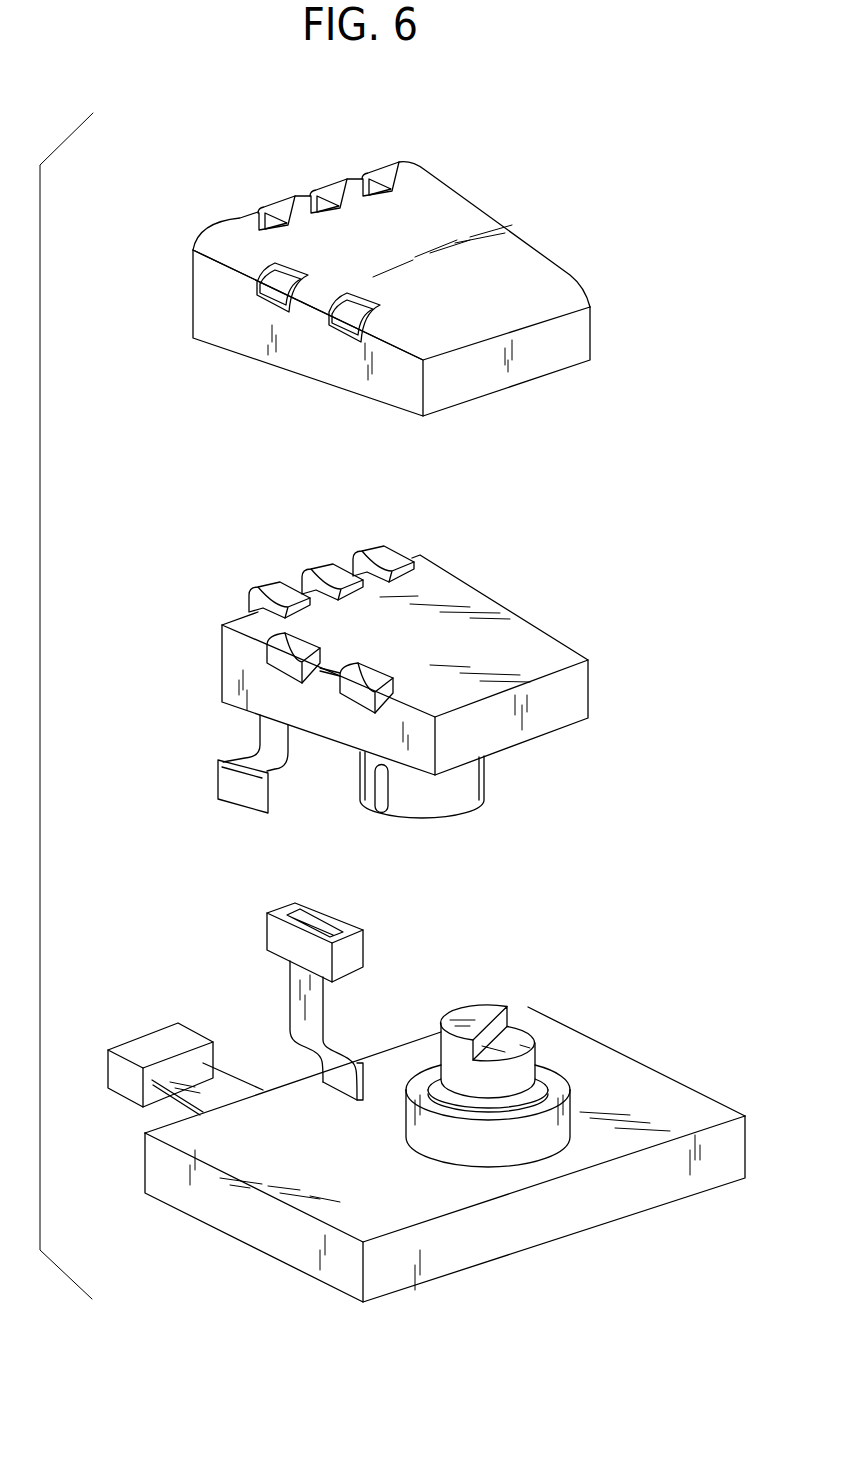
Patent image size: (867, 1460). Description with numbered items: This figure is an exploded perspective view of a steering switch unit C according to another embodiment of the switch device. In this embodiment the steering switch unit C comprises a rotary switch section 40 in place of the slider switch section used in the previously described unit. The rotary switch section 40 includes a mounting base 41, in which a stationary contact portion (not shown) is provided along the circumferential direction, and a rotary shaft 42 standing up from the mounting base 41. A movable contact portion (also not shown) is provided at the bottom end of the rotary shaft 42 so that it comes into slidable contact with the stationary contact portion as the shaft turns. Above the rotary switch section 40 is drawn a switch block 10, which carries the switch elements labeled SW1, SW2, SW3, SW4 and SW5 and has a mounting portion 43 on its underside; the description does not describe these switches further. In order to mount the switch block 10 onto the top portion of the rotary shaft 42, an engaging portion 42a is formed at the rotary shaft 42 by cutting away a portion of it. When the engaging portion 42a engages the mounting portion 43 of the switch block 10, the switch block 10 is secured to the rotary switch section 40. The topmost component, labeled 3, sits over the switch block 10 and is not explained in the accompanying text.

The steering switch unit C is at (492, 162).
The cover 3 is at (533, 262).
The switch block 10 is at (507, 633).
The switch SW1 is at (273, 587).
The switch SW2 is at (327, 570).
The switch SW3 is at (380, 558).
The switch SW4 is at (287, 660).
The switch SW5 is at (367, 680).
The mounting portion 43 is at (483, 787).
The rotary switch section 40 is at (620, 1043).
The mounting base 41 is at (652, 1092).
The rotary shaft 42 is at (470, 1020).
The engaging portion 42a is at (510, 1022).